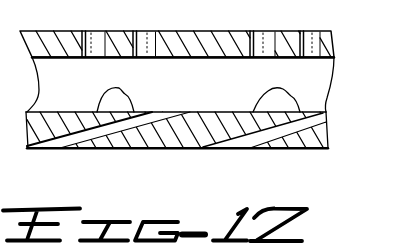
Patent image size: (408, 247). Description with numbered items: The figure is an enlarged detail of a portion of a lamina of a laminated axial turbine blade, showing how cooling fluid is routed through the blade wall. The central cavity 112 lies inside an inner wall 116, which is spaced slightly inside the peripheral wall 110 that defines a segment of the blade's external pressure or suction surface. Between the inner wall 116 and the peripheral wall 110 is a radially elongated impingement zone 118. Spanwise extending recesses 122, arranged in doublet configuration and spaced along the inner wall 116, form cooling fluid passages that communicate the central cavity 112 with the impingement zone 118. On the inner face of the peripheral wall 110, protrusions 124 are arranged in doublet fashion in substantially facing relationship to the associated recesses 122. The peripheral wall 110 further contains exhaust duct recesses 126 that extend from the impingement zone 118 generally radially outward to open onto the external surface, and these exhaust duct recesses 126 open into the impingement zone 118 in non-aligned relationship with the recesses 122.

The peripheral wall 110 is at (177, 146).
The central cavity 112 is at (215, 17).
The inner wall 116 is at (235, 33).
The impingement zone 118 is at (208, 87).
The recesses 122 is at (143, 30).
The protrusions 124 is at (117, 86).
The exhaust duct recesses 126 is at (62, 144).